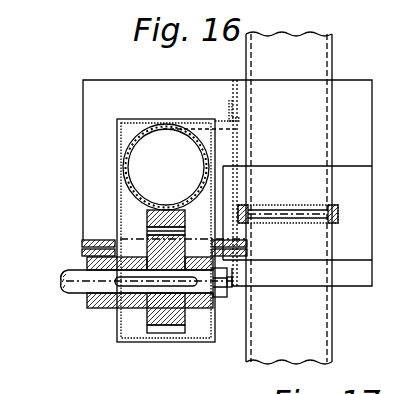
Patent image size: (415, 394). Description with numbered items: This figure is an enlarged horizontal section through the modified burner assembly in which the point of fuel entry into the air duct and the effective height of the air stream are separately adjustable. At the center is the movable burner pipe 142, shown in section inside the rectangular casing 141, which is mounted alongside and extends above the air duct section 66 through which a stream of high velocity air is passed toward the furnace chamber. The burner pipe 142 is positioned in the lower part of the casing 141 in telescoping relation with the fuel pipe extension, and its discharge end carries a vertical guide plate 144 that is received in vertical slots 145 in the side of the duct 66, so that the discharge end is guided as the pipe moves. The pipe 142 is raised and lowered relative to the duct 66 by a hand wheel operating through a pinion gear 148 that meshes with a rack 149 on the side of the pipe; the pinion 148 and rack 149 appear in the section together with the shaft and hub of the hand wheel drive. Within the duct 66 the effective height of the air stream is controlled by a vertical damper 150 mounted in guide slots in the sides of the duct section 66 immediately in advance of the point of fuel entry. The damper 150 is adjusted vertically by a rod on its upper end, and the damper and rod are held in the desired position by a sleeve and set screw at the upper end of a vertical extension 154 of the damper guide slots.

The air duct section 66 is at (332, 323).
The rectangular casing 141 is at (193, 346).
The movable burner pipe 142 is at (133, 147).
The vertical guide plate 144 is at (242, 148).
The vertical slots 145 is at (240, 111).
The pinion gear 148 is at (160, 331).
The rack 149 is at (150, 217).
The vertical damper 150 is at (300, 205).
The vertical extension of the damper guide slots 154 is at (338, 212).